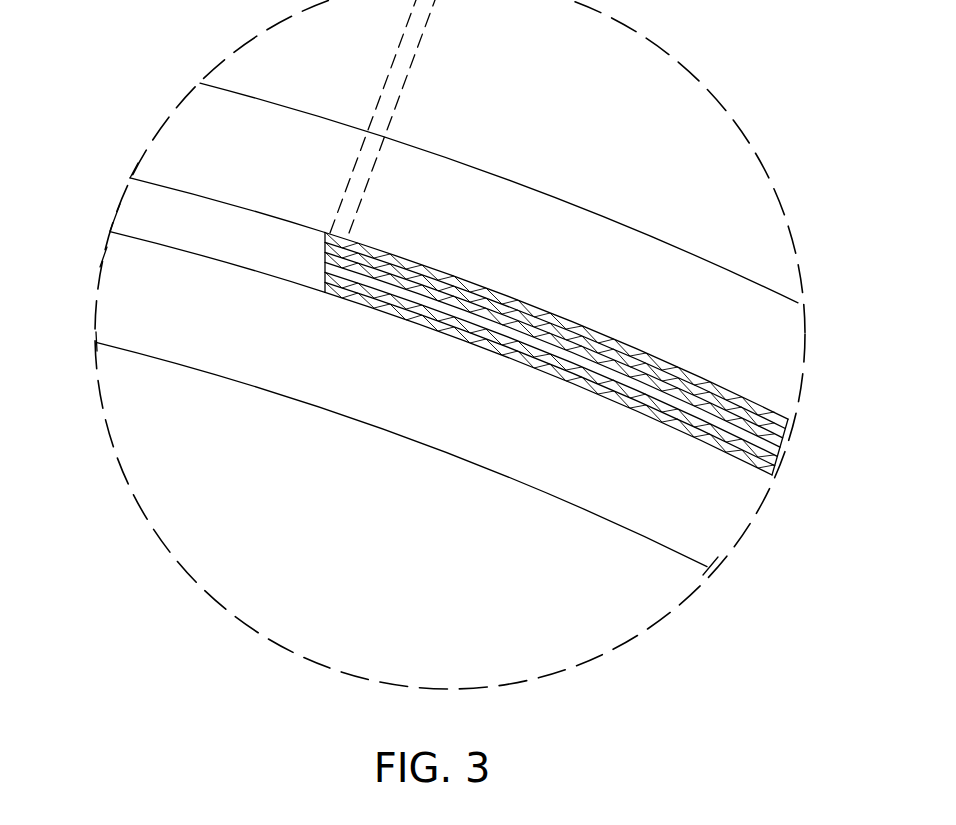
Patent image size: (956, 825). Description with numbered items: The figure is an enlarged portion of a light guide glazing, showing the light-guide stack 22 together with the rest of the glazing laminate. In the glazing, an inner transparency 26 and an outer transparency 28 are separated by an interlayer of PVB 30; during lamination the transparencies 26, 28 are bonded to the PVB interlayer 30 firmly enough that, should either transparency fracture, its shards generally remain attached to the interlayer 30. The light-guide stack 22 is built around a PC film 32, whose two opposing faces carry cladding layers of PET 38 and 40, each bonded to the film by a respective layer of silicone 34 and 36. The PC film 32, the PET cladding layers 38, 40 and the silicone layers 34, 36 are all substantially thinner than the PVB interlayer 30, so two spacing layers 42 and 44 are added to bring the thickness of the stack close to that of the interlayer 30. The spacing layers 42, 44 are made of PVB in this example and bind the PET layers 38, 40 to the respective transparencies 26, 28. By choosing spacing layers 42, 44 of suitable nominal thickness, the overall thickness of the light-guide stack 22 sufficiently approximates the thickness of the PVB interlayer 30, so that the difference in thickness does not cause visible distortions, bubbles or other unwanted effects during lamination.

The light-guide stack 22 is at (602, 353).
The inner transparency 26 is at (123, 272).
The outer transparency 28 is at (158, 153).
The interlayer of PVB 30 is at (140, 215).
The PC film 32 is at (766, 440).
The layer of silicone 34 is at (580, 367).
The layer of silicone 36 is at (572, 343).
The cladding layer of PET 38 is at (445, 322).
The cladding layer of PET 40 is at (433, 283).
The spacing layer 42 is at (368, 305).
The spacing layer 44 is at (497, 298).